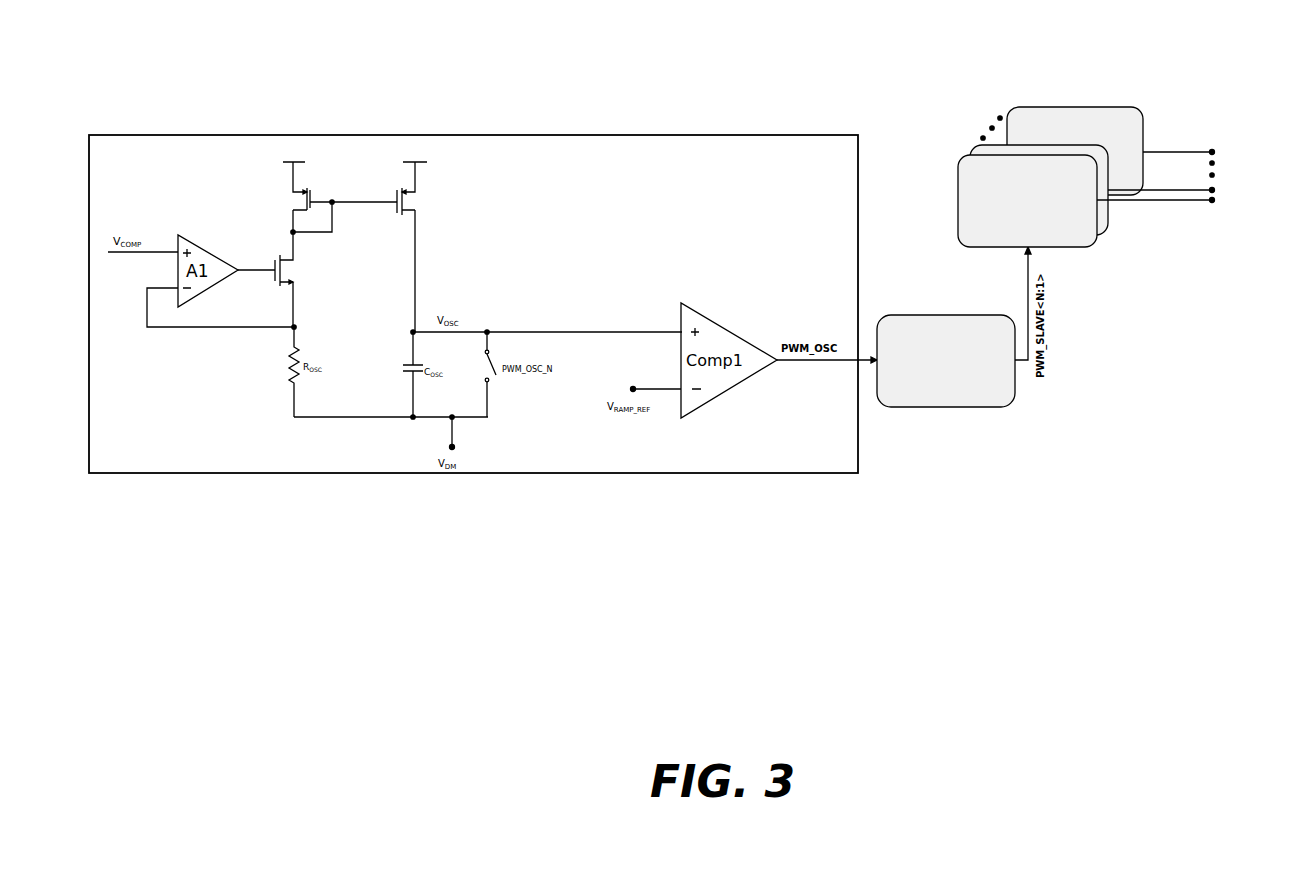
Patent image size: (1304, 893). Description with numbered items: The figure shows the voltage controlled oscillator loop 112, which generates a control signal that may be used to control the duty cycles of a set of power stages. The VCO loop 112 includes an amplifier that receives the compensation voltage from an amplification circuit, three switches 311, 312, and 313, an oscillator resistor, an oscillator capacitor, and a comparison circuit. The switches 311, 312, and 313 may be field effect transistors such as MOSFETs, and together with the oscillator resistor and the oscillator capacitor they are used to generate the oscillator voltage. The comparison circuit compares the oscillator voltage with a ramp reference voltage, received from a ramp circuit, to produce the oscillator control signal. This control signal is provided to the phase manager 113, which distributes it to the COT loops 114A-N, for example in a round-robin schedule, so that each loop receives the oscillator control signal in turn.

The voltage controlled oscillator loop 112 is at (490, 134).
The switch 311 is at (292, 198).
The switch 312 is at (418, 197).
The switch 313 is at (301, 264).
The phase manager 113 is at (910, 314).
The COT loops 114A-N is at (1063, 107).